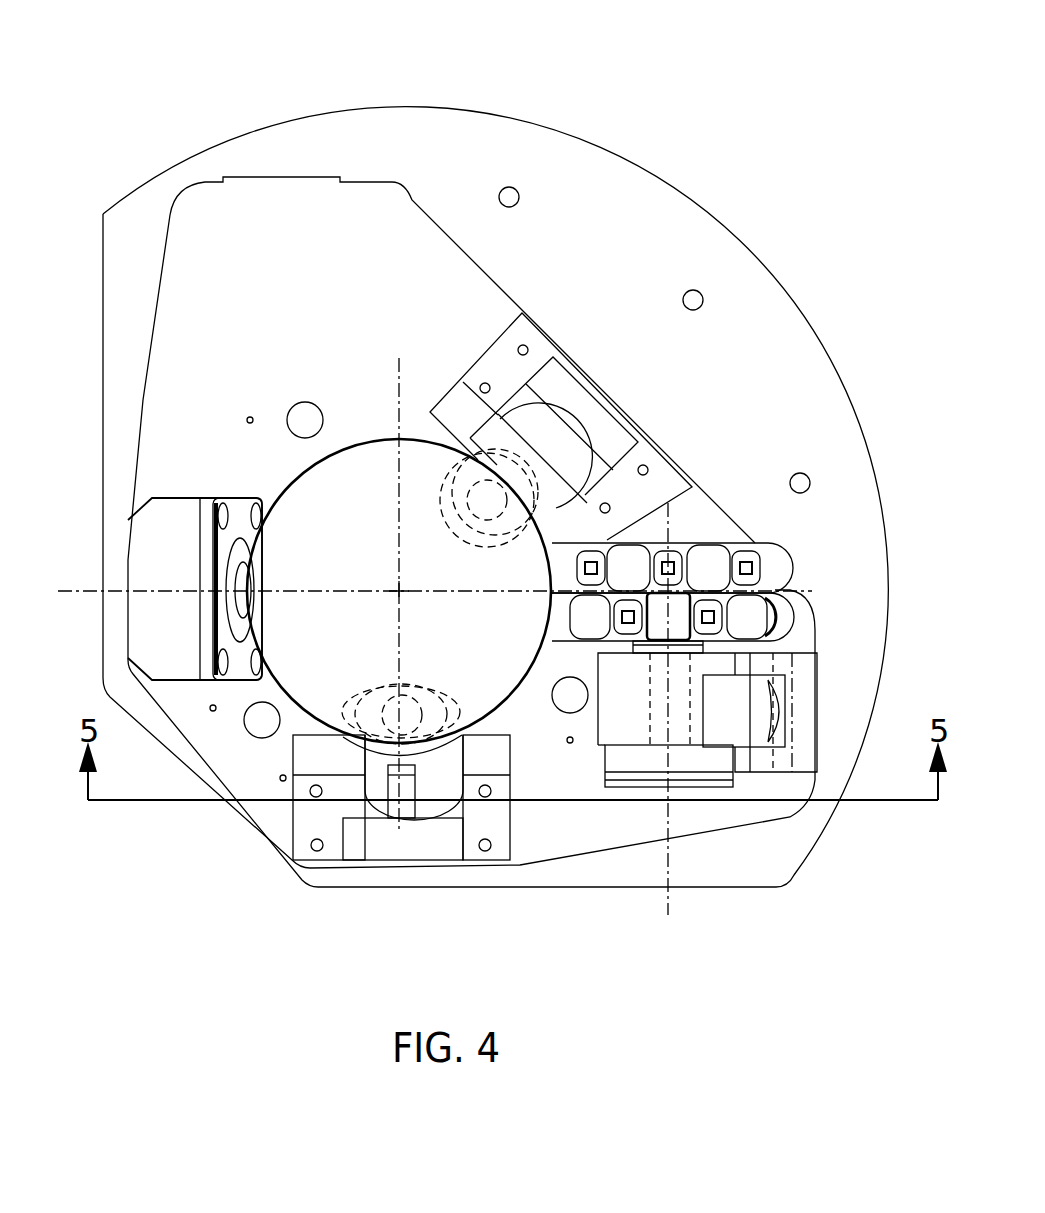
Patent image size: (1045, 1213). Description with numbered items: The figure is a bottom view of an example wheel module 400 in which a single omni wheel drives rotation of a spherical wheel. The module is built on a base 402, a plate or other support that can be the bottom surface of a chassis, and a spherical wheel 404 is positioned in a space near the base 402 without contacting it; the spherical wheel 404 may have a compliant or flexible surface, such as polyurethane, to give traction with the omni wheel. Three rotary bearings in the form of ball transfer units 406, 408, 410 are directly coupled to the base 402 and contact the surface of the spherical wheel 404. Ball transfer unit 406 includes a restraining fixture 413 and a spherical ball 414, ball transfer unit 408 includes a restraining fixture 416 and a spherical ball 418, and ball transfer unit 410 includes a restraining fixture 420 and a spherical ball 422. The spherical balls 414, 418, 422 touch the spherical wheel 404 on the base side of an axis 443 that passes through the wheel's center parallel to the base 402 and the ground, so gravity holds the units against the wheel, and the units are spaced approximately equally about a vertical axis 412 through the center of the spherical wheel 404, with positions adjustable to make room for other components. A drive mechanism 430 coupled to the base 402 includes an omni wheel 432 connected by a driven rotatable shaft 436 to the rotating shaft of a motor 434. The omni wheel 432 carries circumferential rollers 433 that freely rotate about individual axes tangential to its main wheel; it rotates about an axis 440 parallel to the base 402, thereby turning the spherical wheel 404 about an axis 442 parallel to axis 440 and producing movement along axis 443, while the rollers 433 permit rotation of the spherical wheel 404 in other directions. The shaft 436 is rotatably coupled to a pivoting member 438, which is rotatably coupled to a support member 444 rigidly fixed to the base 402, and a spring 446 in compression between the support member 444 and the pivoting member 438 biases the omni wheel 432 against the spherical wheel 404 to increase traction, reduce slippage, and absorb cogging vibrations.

The wheel module 400 is at (187, 60).
The base 402 is at (291, 324).
The spherical wheel 404 is at (357, 539).
The ball transfer unit 406 is at (466, 412).
The restraining fixture 413 is at (523, 422).
The spherical ball 414 is at (487, 503).
The axis 442 is at (393, 398).
The axis 443 is at (78, 590).
The axis 440 is at (672, 903).
The vertical axis 412 is at (405, 585).
The ball transfer unit 410 is at (188, 483).
The restraining fixture 420 is at (170, 615).
The spherical ball 422 is at (244, 550).
The omni wheel 432 is at (781, 532).
The rollers 433 is at (630, 560).
The drive mechanism 430 is at (597, 763).
The driven rotatable shaft 436 is at (685, 677).
The pivoting member 438 is at (625, 707).
The motor 434 is at (687, 762).
The support member 444 is at (810, 738).
The spring 446 is at (770, 713).
The ball transfer unit 408 is at (335, 792).
The restraining fixture 416 is at (433, 790).
The spherical ball 418 is at (412, 706).